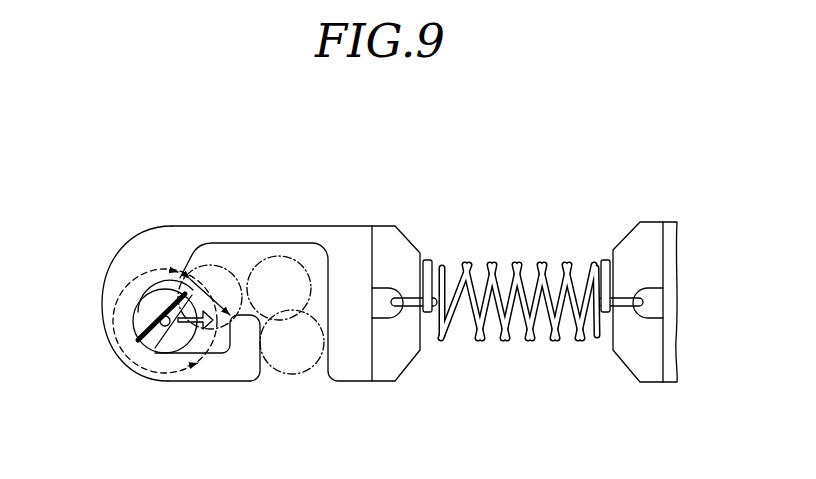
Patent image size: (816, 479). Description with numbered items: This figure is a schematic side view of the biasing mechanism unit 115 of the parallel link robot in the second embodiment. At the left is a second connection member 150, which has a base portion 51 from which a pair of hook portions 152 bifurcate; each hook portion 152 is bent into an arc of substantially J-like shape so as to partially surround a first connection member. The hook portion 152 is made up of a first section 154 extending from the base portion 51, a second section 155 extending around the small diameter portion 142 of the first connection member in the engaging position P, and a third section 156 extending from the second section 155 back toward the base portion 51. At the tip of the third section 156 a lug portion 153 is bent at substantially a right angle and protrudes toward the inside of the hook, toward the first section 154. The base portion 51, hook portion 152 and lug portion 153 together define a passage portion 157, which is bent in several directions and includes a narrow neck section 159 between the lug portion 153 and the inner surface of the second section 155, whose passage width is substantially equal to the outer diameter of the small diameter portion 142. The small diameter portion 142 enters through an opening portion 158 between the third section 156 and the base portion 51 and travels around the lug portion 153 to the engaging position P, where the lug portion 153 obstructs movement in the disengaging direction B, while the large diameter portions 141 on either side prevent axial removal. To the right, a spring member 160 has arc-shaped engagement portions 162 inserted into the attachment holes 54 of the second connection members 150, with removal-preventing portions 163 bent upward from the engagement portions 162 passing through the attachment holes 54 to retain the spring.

The hook portion 152 is at (198, 208).
The first section 154 is at (253, 236).
The second section 155 is at (140, 250).
The third section 156 is at (219, 383).
The lug portion 153 is at (262, 342).
The base portion 51 is at (359, 232).
The attachment hole 54 is at (390, 313).
The neck section 159 is at (218, 268).
The passage portion 157 is at (295, 285).
The opening portion 158 is at (314, 377).
The large diameter portion 141 is at (172, 375).
The small diameter portion 142 is at (153, 358).
The disengaging direction B is at (143, 300).
The engaging position P is at (133, 343).
The second connection member 150 is at (413, 226).
The biasing mechanism unit 115 is at (517, 264).
The engagement portion 162 is at (428, 321).
The removal-preventing portion 163 is at (427, 260).
The spring member 160 is at (523, 257).